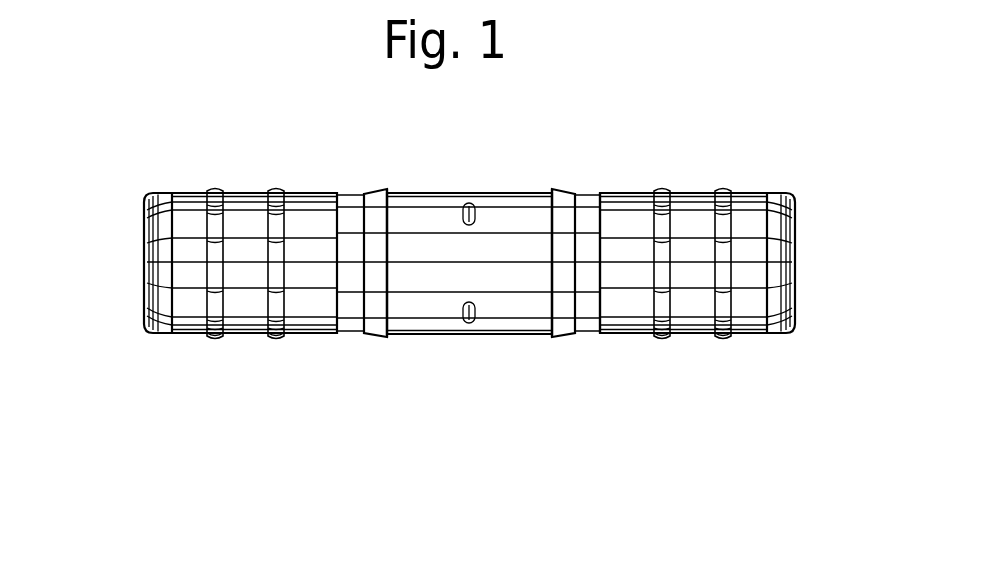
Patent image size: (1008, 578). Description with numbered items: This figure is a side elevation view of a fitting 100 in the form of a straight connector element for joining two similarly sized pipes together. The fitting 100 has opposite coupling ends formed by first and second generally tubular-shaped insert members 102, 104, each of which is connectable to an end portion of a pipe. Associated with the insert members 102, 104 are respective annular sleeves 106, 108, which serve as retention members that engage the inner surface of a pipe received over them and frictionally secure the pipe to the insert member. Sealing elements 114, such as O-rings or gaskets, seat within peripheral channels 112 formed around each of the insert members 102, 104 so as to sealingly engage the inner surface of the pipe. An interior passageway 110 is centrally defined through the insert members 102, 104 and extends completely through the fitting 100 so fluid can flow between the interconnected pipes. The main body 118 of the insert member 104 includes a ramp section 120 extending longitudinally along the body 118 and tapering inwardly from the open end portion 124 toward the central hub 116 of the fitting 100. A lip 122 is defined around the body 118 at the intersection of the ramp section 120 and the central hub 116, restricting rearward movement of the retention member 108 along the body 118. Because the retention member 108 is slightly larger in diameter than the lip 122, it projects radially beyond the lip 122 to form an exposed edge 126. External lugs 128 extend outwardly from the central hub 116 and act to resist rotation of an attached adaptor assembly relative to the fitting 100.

The fitting 100 is at (617, 102).
The first insert member 102 is at (168, 190).
The second insert member 104 is at (752, 342).
The annular sleeve 106 is at (372, 190).
The annular sleeve 108 is at (562, 190).
The interior passageway 110 is at (143, 252).
The peripheral channels 112 is at (276, 337).
The sealing elements 114 is at (276, 190).
The central hub 116 is at (497, 323).
The main body 118 is at (612, 335).
The ramp section 120 is at (583, 200).
The lip 122 is at (563, 335).
The open end portion 124 is at (795, 290).
The exposed edge 126 is at (389, 188).
The lugs 128 is at (470, 200).